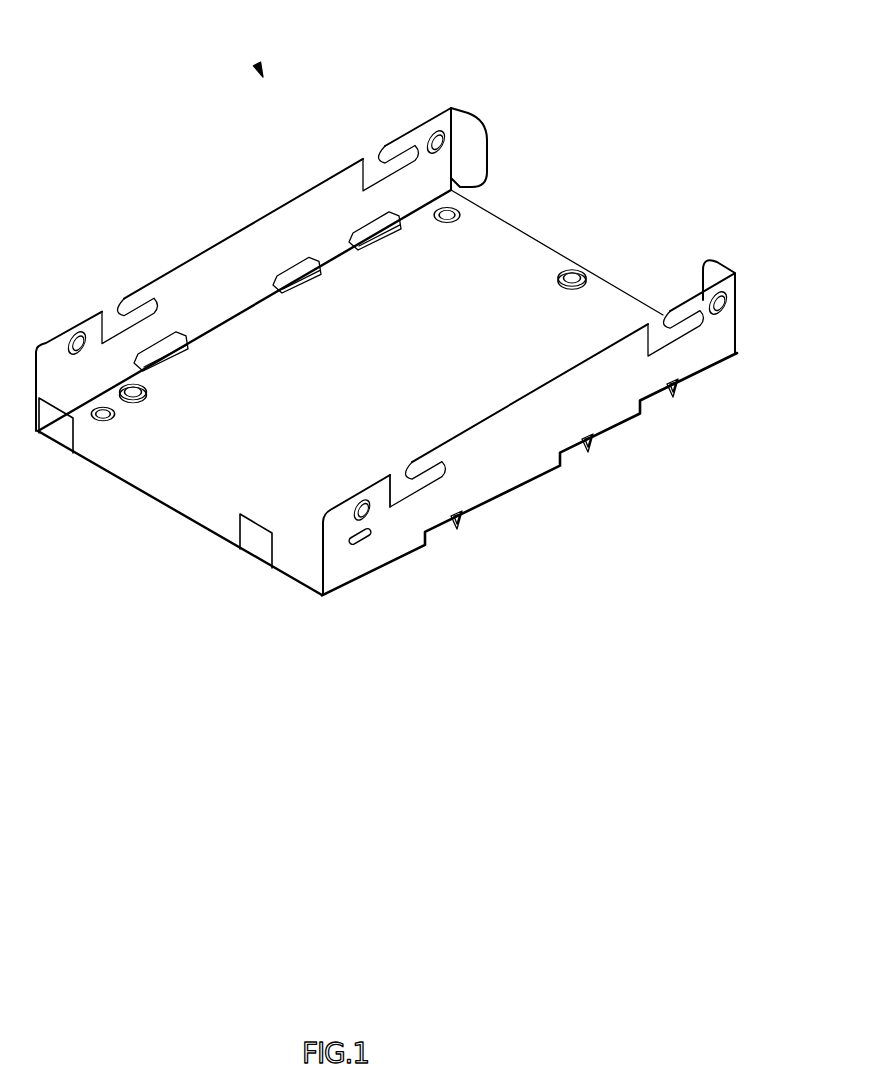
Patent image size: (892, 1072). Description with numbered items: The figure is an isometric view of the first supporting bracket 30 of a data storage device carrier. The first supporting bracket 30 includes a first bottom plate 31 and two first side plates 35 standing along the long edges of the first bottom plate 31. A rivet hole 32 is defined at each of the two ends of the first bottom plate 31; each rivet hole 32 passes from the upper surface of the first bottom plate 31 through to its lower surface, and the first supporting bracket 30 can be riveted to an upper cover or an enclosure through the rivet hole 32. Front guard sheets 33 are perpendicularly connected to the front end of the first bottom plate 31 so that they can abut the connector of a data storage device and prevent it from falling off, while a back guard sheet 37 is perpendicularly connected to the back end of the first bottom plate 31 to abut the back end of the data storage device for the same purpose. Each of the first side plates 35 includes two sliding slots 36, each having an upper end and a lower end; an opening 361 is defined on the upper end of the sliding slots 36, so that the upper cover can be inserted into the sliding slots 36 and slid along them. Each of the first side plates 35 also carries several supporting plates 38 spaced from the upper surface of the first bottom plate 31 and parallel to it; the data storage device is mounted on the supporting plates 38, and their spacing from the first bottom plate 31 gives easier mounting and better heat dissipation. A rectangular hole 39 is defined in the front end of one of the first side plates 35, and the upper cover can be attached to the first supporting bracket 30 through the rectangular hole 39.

The first supporting bracket 30 is at (262, 74).
The first bottom plate 31 is at (165, 482).
The rivet hole 32 is at (103, 420).
The front guard sheet 33 is at (262, 548).
The first side plate 35 is at (513, 470).
The sliding slot 36 is at (425, 481).
The opening 361 is at (395, 478).
The back guard sheet 37 is at (472, 161).
The supporting plate 38 is at (297, 272).
The rectangular hole 39 is at (357, 541).